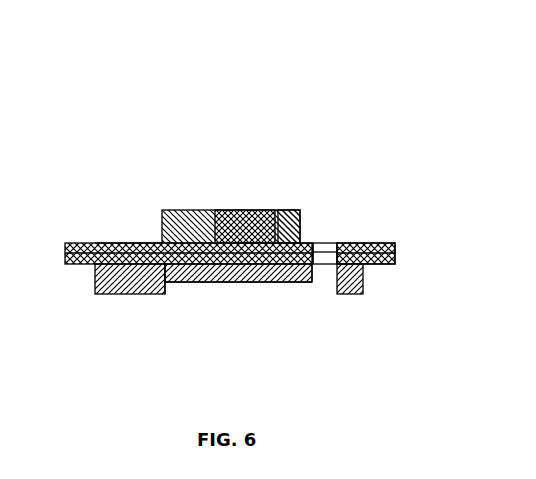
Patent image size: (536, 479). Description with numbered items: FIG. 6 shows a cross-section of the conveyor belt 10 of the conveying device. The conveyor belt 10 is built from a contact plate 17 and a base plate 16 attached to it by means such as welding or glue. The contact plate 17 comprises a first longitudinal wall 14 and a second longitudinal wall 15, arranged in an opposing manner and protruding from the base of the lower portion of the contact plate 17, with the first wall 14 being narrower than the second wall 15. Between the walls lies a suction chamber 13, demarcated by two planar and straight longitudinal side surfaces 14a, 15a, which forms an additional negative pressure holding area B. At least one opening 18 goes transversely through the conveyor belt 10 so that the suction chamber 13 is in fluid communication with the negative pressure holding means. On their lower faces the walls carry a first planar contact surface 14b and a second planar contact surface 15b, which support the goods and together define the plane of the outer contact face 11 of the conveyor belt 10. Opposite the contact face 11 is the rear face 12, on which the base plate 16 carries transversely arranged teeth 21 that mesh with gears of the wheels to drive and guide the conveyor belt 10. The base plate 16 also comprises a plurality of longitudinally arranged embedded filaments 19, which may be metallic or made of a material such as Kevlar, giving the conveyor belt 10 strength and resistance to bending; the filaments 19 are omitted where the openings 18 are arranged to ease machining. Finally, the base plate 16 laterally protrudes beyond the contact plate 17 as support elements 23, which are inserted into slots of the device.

The conveyor belt 10 is at (163, 100).
The contact face 11 is at (140, 306).
The rear face 12 is at (150, 243).
The suction chamber 13 is at (245, 290).
The first longitudinal wall 14 is at (387, 244).
The side surface 14a is at (338, 284).
The first planar contact surface 14b is at (357, 297).
The second longitudinal wall 15 is at (105, 243).
The side surface 15a is at (165, 283).
The second planar contact surface 15b is at (123, 295).
The base plate 16 is at (300, 247).
The contact plate 17 is at (287, 210).
The opening 18 is at (330, 257).
The embedded filaments 19 is at (200, 210).
The teeth 21 is at (238, 210).
The support elements 23 is at (85, 266).
The additional negative pressure holding area B is at (233, 297).